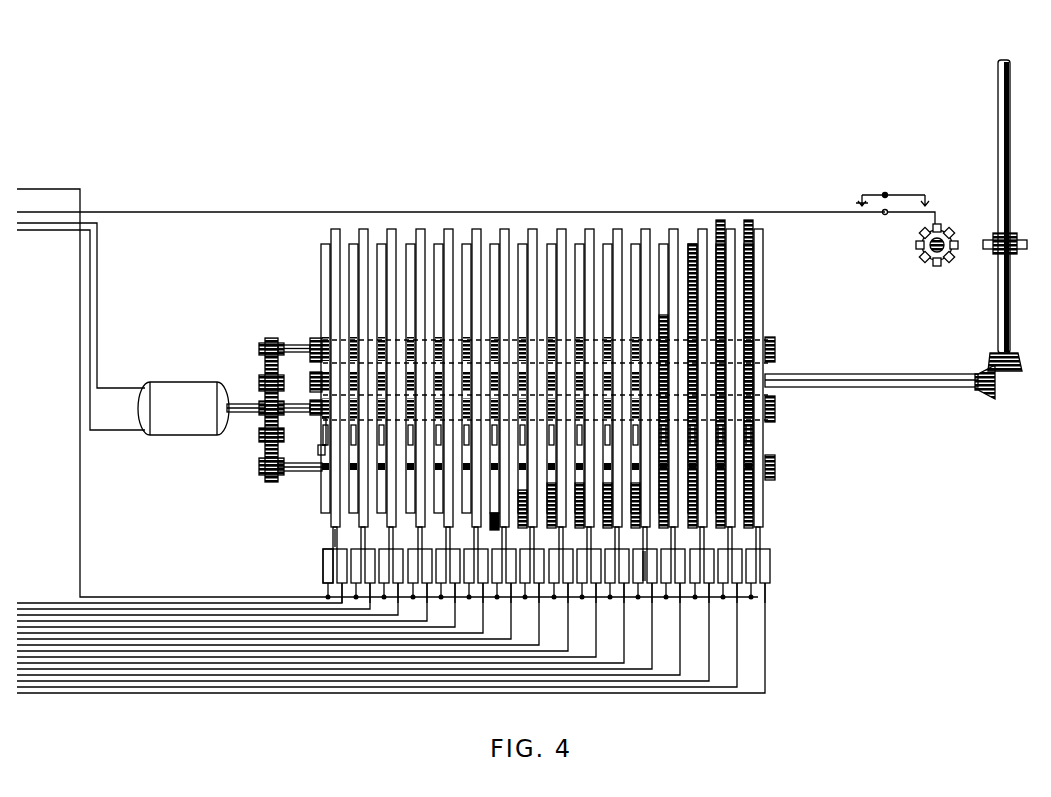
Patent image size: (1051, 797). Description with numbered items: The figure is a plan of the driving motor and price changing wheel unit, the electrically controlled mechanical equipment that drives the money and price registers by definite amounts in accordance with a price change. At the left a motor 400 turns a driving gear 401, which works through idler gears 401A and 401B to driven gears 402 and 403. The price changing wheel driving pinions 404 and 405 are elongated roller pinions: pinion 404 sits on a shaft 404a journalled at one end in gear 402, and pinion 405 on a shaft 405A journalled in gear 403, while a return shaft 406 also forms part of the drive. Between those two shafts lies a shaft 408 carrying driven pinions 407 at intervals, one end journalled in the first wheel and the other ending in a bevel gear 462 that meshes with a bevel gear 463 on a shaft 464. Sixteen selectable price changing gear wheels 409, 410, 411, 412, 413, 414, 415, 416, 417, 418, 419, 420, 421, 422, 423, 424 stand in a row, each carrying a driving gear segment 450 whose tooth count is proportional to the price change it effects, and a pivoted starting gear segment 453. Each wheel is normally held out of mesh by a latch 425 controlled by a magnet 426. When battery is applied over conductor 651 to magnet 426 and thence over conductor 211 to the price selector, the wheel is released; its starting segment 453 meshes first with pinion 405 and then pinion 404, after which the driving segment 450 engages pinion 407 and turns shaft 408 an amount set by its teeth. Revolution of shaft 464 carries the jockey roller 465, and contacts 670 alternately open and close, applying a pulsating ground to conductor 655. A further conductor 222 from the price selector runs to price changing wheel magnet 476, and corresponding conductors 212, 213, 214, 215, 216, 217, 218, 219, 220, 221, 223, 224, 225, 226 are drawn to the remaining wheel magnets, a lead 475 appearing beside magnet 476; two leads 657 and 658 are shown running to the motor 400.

The conductor 211 is at (55, 603).
The output conductor 212 is at (116, 609).
The output conductor 213 is at (144, 615).
The output conductor 214 is at (175, 621).
The output conductor 215 is at (205, 627).
The output conductor 216 is at (237, 633).
The output conductor 217 is at (268, 639).
The output conductor 218 is at (302, 645).
The output conductor 219 is at (317, 651).
The output conductor 220 is at (353, 657).
The output conductor 221 is at (388, 663).
The conductor 222 is at (420, 669).
The output conductor 223 is at (455, 675).
The output conductor 224 is at (490, 681).
The output conductor 225 is at (527, 687).
The output conductor 226 is at (566, 693).
The motor 400 is at (183, 408).
The driving gear 401 is at (267, 418).
The idler gear 401A is at (265, 445).
The idler gear 401B is at (260, 383).
The driven gear 402 is at (268, 340).
The driven gear 403 is at (266, 477).
The price changing wheel driving pinion 404 is at (317, 338).
The shaft 404a is at (287, 345).
The price changing wheel driving pinion 405 is at (318, 420).
The shaft 405A is at (302, 406).
The return shaft 406 is at (315, 473).
The driven pinion 407 is at (314, 368).
The shaft 408 is at (884, 374).
The selectable price changing wheel 409 is at (334, 409).
The selectable price changing wheel 410 is at (362, 409).
The selectable price changing wheel 411 is at (390, 409).
The selectable price changing wheel 412 is at (419, 409).
The selectable price changing wheel 413 is at (447, 409).
The selectable price changing wheel 414 is at (475, 409).
The selectable price changing wheel 415 is at (503, 409).
The selectable price changing wheel 416 is at (531, 409).
The selectable price changing wheel 417 is at (560, 409).
The selectable price changing wheel 418 is at (588, 409).
The selectable price changing wheel 419 is at (616, 409).
The selectable price changing wheel 420 is at (644, 409).
The selectable price changing wheel 421 is at (672, 409).
The selectable price changing wheel 422 is at (701, 409).
The selectable price changing wheel 423 is at (727, 226).
The selectable price changing wheel 424 is at (756, 226).
The latch 425 is at (330, 546).
The magnet 426 is at (324, 561).
The driving gear segment 450 is at (319, 452).
The starting gear segment 453 is at (319, 438).
The bevel gear 462 is at (995, 389).
The bevel gear 463 is at (1011, 372).
The shaft 464 is at (998, 317).
The jockey roller 465 is at (918, 252).
The contact lead 475 is at (655, 580).
The price changing wheel magnet 476 is at (648, 580).
The conductor 651 is at (82, 509).
The conductor 655 is at (830, 212).
The motor conductor 657 is at (134, 388).
The motor conductor 658 is at (130, 430).
The contacts 670 is at (894, 195).